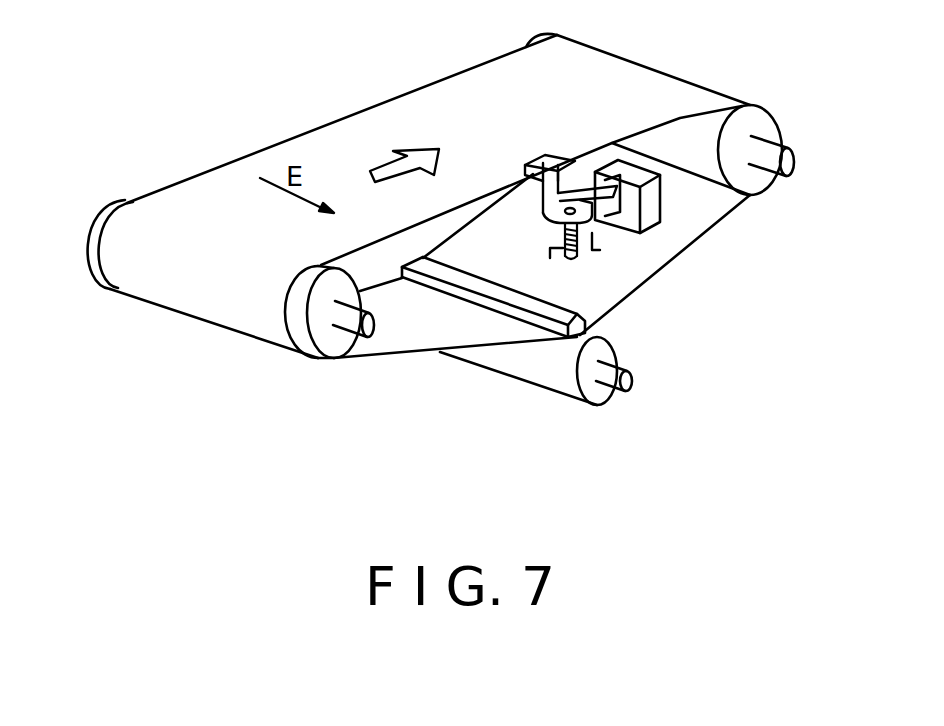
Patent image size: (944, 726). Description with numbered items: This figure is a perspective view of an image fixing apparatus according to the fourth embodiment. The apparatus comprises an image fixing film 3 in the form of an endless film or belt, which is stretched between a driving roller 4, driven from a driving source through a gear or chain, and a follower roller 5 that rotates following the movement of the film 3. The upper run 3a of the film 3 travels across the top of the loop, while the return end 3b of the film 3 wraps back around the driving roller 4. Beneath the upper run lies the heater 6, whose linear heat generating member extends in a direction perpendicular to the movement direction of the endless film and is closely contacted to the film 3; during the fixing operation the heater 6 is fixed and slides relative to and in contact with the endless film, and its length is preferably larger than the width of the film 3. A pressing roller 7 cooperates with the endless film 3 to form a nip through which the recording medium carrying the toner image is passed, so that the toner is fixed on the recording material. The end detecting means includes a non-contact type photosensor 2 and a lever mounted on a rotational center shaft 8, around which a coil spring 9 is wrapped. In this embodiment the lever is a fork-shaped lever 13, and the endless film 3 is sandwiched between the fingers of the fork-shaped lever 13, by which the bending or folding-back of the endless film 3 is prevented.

The non-contact type photosensor 2 is at (648, 220).
The image fixing film 3 is at (322, 142).
The upper run of the endless film 3a is at (698, 108).
The return end of the endless film 3b is at (207, 173).
The driving roller 4 is at (328, 345).
The follower roller 5 is at (763, 123).
The heater 6 is at (499, 293).
The pressing roller 7 is at (538, 385).
The rotational center shaft 8 is at (577, 256).
The coil spring 9 is at (592, 250).
The fork-shaped lever 13 is at (553, 158).